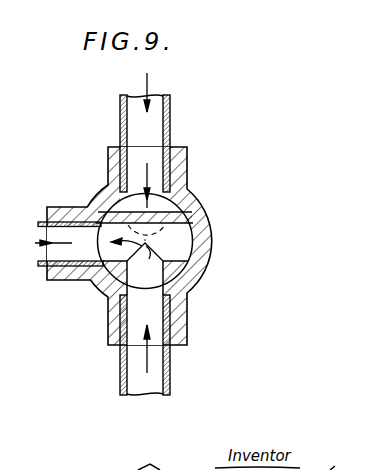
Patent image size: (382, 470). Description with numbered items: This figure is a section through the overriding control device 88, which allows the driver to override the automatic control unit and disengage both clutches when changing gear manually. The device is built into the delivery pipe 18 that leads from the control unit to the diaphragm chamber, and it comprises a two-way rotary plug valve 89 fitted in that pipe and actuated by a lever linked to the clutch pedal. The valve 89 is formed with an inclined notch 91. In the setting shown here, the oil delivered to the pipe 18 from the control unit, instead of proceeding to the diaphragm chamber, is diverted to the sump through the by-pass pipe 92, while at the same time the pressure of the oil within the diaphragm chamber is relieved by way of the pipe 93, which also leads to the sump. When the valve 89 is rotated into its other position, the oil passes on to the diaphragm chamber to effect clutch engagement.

The delivery pipe 18 is at (148, 133).
The overriding control device 88 is at (175, 189).
The two-way rotary plug valve 89 is at (175, 268).
The inclined notch 91 is at (138, 212).
The by-pass pipe 92 is at (148, 209).
The pipe 93 is at (78, 250).